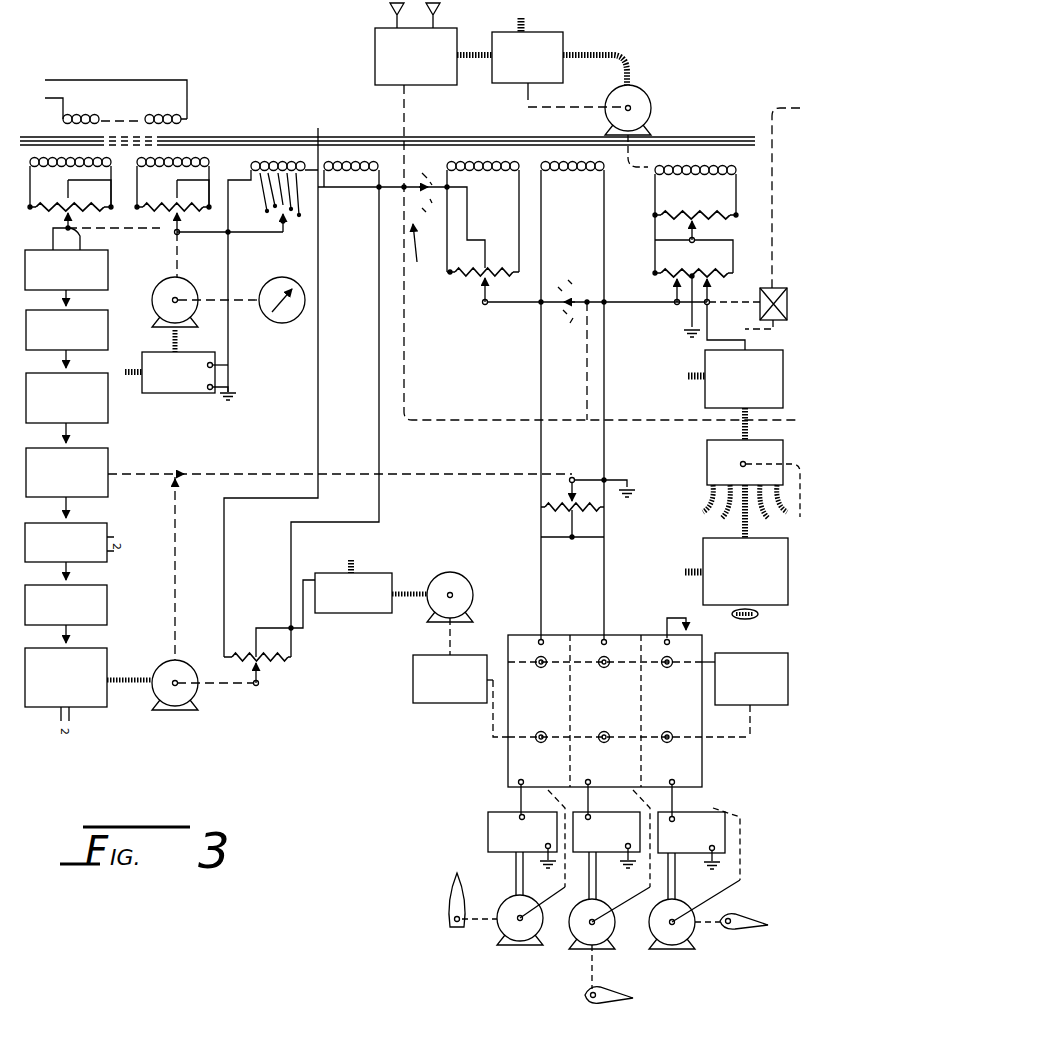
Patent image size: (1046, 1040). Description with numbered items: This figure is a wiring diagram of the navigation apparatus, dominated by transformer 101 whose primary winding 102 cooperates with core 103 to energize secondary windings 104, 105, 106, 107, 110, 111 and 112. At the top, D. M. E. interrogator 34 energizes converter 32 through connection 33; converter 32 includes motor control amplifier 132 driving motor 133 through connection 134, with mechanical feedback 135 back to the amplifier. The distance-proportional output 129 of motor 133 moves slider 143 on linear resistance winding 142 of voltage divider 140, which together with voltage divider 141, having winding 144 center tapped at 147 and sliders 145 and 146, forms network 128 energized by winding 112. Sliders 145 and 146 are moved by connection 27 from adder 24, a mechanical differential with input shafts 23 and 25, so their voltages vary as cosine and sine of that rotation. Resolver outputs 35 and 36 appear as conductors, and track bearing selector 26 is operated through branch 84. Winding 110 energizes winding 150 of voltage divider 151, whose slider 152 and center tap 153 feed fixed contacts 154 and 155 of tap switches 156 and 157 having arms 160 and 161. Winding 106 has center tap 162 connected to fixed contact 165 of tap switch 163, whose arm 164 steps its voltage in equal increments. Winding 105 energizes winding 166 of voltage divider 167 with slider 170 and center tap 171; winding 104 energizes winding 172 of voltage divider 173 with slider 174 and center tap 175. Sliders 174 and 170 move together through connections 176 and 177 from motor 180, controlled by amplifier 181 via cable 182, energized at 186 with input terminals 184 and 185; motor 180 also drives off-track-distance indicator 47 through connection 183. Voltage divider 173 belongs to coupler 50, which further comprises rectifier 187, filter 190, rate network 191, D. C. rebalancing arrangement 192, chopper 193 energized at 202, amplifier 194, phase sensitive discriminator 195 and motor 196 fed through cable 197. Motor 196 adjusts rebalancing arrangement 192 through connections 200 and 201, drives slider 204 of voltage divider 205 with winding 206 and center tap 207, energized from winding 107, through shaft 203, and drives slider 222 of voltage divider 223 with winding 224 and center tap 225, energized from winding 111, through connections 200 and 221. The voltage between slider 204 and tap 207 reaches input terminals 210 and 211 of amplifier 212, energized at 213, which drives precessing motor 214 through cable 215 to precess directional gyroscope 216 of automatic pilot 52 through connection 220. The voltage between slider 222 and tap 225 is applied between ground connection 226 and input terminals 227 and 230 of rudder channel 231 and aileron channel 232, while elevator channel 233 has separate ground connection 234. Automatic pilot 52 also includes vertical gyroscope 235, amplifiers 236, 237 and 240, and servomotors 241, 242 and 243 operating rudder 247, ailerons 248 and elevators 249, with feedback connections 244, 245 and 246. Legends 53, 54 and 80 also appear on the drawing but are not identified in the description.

The output shaft 23 is at (772, 216).
The adder 24 is at (784, 263).
The second input shaft 25 is at (768, 329).
The track bearing selector 26 is at (703, 486).
The mechanical connection 27 is at (737, 308).
The converter 32 is at (592, 38).
The electrical signal 33 is at (472, 54).
The D. M. E. interrogator 34 is at (375, 43).
The output signal 35 is at (668, 302).
The output signal 36 is at (722, 344).
The off-track-distance indicator 47 is at (285, 325).
The coupler 50 is at (258, 463).
The automatic pilot 52 is at (491, 789).
The rudder servo 53 is at (506, 891).
The aileron servo 54 is at (583, 966).
The elevator servo 80 is at (712, 939).
The branch 84 is at (742, 541).
The transformer 101 is at (247, 133).
The primary winding 102 is at (188, 122).
The core 103 is at (365, 140).
The secondary winding 104 is at (33, 170).
The secondary winding 105 is at (209, 166).
The secondary winding 106 is at (251, 171).
The secondary winding 107 is at (376, 170).
The secondary winding 110 is at (470, 174).
The secondary winding 111 is at (557, 174).
The secondary winding 112 is at (734, 174).
The network 128 is at (751, 224).
The mechanical output 129 is at (646, 160).
The motor control amplifier 132 is at (527, 26).
The motor 133 is at (652, 101).
The connection 134 is at (636, 63).
The mechanical feedback 135 is at (556, 109).
The voltage divider 140 is at (648, 231).
The voltage divider 141 is at (650, 269).
The linear resistance winding 142 is at (713, 213).
The slider 143 is at (699, 241).
The resistance winding 144 is at (693, 290).
The slider 145 is at (671, 294).
The slider 146 is at (711, 300).
The center tap 147 is at (717, 252).
The winding 150 is at (503, 266).
The voltage divider 151 is at (472, 314).
The slider 152 is at (482, 301).
The center tap 153 is at (484, 268).
The fixed contact 154 is at (433, 192).
The fixed contact 155 is at (560, 304).
The tap switch 156 is at (448, 272).
The tap switch 157 is at (566, 328).
The switching arm 160 is at (429, 186).
The switching arm 161 is at (568, 293).
The center tap 162 is at (318, 132).
The tap switch 163 is at (293, 224).
The switching arm 164 is at (280, 221).
The fixed contact 165 is at (266, 208).
The winding 166 is at (141, 170).
The voltage divider 167 is at (135, 186).
The slider 170 is at (180, 214).
The center tap 171 is at (173, 207).
The winding 172 is at (64, 212).
The voltage divider 173 is at (96, 220).
The slider 174 is at (84, 240).
The center tap 175 is at (70, 205).
The mechanical connection 176 is at (160, 228).
The mechanical connection 177 is at (180, 256).
The motor 180 is at (179, 279).
The amplifier 181 is at (179, 394).
The cable 182 is at (180, 341).
The mechanical connection 183 is at (240, 297).
The input terminal 184 is at (230, 370).
The input terminal 185 is at (229, 399).
The source of alternating voltage 186 is at (132, 376).
The rectifier 187 is at (108, 283).
The filter 190 is at (108, 328).
The rate network 191 is at (108, 418).
The D. C. rebalancing arrangement 192 is at (108, 463).
The chopper 193 is at (101, 524).
The amplifier 194 is at (108, 597).
The phase sensitive discriminator 195 is at (99, 648).
The motor 196 is at (200, 702).
The cable 197 is at (126, 688).
The mechanical connection 200 is at (181, 580).
The mechanical connection 201 is at (205, 452).
The alternating voltage connection 202 is at (114, 553).
The shaft 203 is at (240, 690).
The slider 204 is at (260, 689).
The voltage divider 205 is at (269, 661).
The winding 206 is at (238, 659).
The center tap 207 is at (257, 653).
The input terminal 210 is at (322, 577).
The input terminal 211 is at (320, 613).
The amplifier 212 is at (381, 574).
The alternating voltage connection 213 is at (352, 566).
The precessing motor 214 is at (450, 573).
The connecting cable 215 is at (411, 598).
The directional gyroscope 216 is at (413, 682).
The mechanical connection 220 is at (456, 641).
The mechanical connection 221 is at (450, 474).
The slider 222 is at (572, 478).
The voltage divider 223 is at (548, 524).
The winding 224 is at (543, 508).
The center tap 225 is at (576, 513).
The ground connection 226 is at (633, 491).
The input terminal 227 is at (536, 638).
The input terminal 230 is at (606, 638).
The rudder channel 231 is at (629, 711).
The aileron channel 232 is at (590, 712).
The elevator channel 233 is at (661, 712).
The ground connection 234 is at (687, 617).
The vertical gyroscope 235 is at (736, 653).
The amplifier 236 is at (488, 832).
The amplifier 237 is at (604, 853).
The amplifier 240 is at (725, 840).
The servomotor 241 is at (509, 948).
The servomotor 242 is at (601, 950).
The servomotor 243 is at (665, 950).
The feedback connection 244 is at (560, 810).
The feedback connection 245 is at (643, 810).
The feedback connection 246 is at (726, 810).
The rudder 247 is at (454, 899).
The ailerons 248 is at (629, 999).
The elevators 249 is at (749, 928).